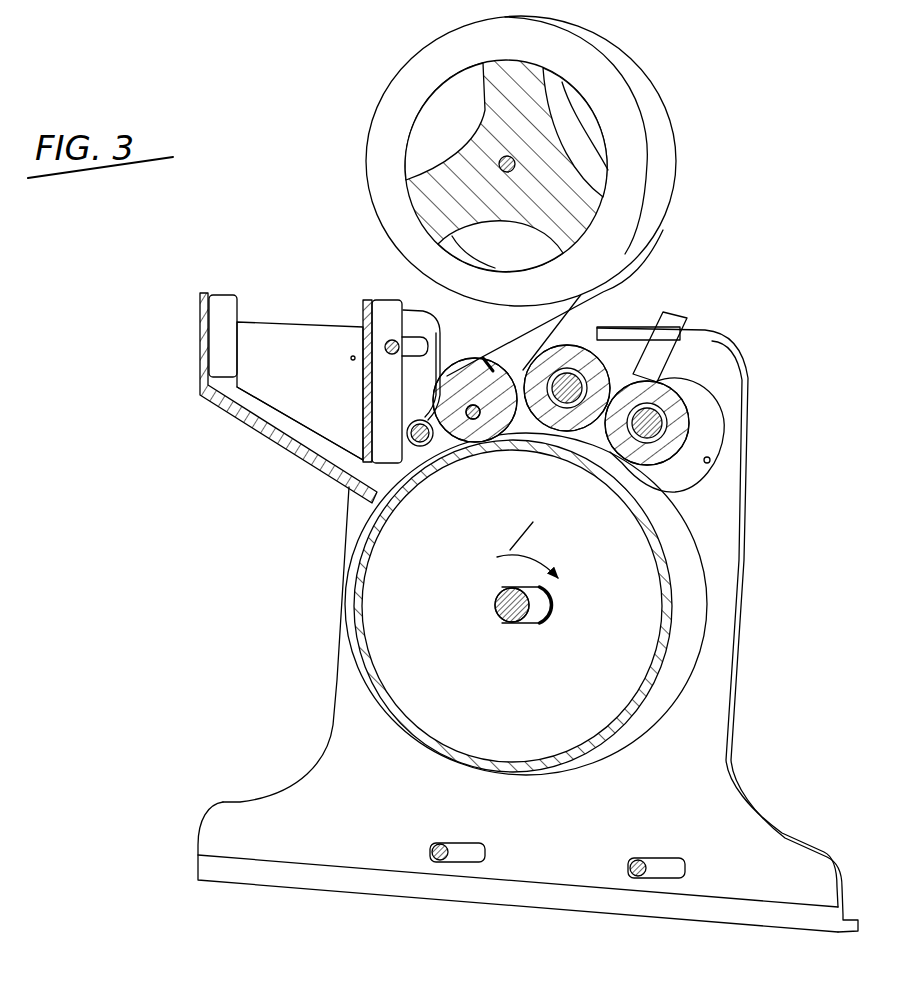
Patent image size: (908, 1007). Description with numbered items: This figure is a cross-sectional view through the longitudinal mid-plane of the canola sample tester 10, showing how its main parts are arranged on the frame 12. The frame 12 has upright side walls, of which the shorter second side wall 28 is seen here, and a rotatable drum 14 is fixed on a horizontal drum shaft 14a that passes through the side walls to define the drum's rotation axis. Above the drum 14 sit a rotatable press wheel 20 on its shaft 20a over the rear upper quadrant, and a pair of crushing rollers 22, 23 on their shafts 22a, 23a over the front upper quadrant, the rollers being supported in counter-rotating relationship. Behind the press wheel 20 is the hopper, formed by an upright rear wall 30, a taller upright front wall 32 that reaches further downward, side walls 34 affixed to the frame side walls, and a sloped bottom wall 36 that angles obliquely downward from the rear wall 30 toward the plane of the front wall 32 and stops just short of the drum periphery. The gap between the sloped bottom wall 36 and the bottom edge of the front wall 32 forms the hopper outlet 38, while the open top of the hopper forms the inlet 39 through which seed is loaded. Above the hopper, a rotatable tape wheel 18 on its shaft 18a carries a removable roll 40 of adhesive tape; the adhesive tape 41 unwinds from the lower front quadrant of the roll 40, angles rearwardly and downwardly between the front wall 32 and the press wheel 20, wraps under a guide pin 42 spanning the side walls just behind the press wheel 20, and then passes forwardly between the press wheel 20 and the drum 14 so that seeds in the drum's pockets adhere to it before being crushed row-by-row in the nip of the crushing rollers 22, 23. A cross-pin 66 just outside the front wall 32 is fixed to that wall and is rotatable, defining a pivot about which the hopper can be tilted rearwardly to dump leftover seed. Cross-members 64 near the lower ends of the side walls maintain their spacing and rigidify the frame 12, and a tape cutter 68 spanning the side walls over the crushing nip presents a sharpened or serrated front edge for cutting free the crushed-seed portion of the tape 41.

The canola sample tester 10 is at (846, 162).
The frame 12 is at (716, 712).
The rotatable drum 14 is at (698, 576).
The drum shaft 14a is at (496, 602).
The rotatable tape wheel 18 is at (490, 105).
The tape wheel shaft 18a is at (498, 166).
The rotatable press wheel 20 is at (519, 372).
The press wheel shaft 20a is at (472, 421).
The crushing roller 22 is at (576, 378).
The crushing roller shaft 22a is at (638, 333).
The crushing roller 23 is at (705, 364).
The crushing roller shaft 23a is at (650, 410).
The second side wall 28 is at (285, 820).
The rear wall 30 is at (225, 302).
The front wall 32 is at (388, 308).
The side walls 34 is at (307, 338).
The sloped bottom wall 36 is at (275, 412).
The outlet 38 is at (372, 472).
The inlet 39 is at (330, 300).
The roll of adhesive tape 40 is at (644, 103).
The adhesive tape 41 is at (495, 360).
The guide pin 42 is at (421, 447).
The cross-members 64 is at (457, 846).
The cross-pin 66 is at (390, 350).
The tape cutter 68 is at (687, 318).